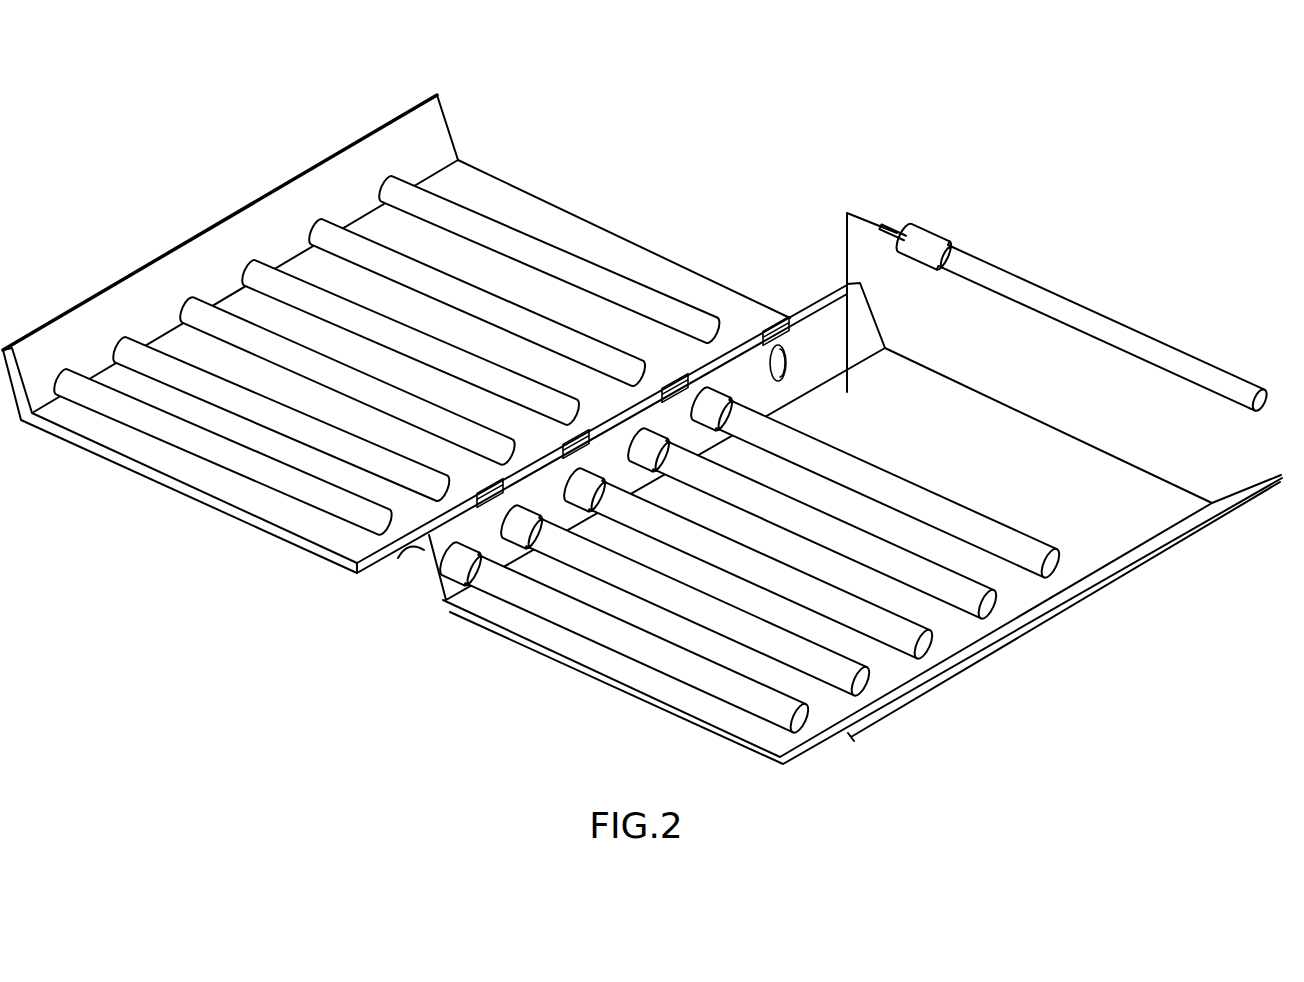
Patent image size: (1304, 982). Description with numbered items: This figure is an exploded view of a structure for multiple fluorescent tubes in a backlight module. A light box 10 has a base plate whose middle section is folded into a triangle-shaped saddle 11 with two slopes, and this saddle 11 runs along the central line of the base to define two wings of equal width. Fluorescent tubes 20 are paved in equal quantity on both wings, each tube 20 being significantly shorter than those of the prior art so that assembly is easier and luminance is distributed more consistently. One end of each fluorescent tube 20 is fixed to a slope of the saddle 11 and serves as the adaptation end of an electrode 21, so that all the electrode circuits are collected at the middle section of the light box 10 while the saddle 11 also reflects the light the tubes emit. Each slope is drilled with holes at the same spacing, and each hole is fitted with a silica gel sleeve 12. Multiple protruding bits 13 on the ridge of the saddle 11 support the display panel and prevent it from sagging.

The light box 10 is at (1134, 478).
The saddle 11 is at (447, 580).
The silica gel sleeve 12 is at (786, 366).
The protruding bit 13 is at (768, 318).
The fluorescent tube 20 is at (585, 268).
The electrode 21 is at (889, 222).